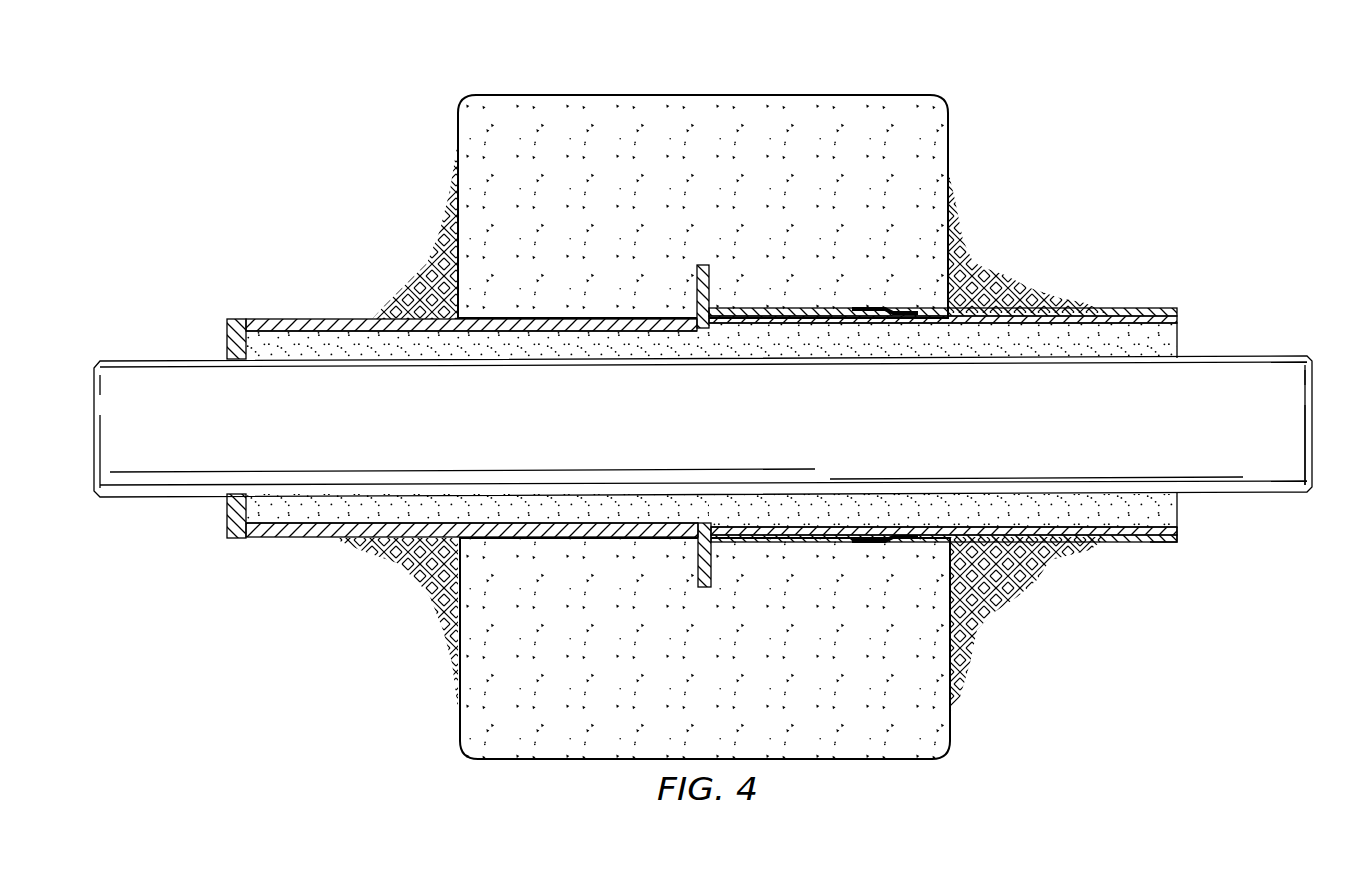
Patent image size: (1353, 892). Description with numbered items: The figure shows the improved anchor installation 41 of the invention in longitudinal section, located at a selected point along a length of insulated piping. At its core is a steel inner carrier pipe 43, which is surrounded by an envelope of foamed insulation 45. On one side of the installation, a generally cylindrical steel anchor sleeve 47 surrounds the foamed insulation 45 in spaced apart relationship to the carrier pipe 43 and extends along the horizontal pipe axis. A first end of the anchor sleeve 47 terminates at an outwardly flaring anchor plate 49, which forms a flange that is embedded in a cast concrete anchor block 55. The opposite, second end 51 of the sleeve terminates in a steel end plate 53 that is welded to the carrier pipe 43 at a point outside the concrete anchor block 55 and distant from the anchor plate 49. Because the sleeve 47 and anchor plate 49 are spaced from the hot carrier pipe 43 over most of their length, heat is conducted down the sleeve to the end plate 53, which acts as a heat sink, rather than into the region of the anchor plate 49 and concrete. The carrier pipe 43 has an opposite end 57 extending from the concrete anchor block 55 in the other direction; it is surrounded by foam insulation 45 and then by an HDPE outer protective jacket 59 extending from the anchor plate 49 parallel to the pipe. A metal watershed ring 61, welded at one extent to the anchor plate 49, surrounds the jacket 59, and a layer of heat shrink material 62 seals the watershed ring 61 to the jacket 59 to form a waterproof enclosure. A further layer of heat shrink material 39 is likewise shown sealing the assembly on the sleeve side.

The layer of heat shrink material 39 is at (862, 306).
The anchor installation 41 is at (978, 57).
The inner carrier pipe 43 is at (122, 358).
The envelope of foamed insulation 45 is at (313, 510).
The anchor sleeve 47 is at (347, 318).
The anchor plate 49 is at (705, 588).
The second end 51 is at (254, 318).
The end plate 53 is at (226, 510).
The concrete anchor block 55 is at (518, 95).
The opposite end 57 is at (1287, 356).
The outer protective jacket 59 is at (1148, 540).
The watershed ring 61 is at (802, 543).
The layer of heat shrink material 62 is at (870, 545).